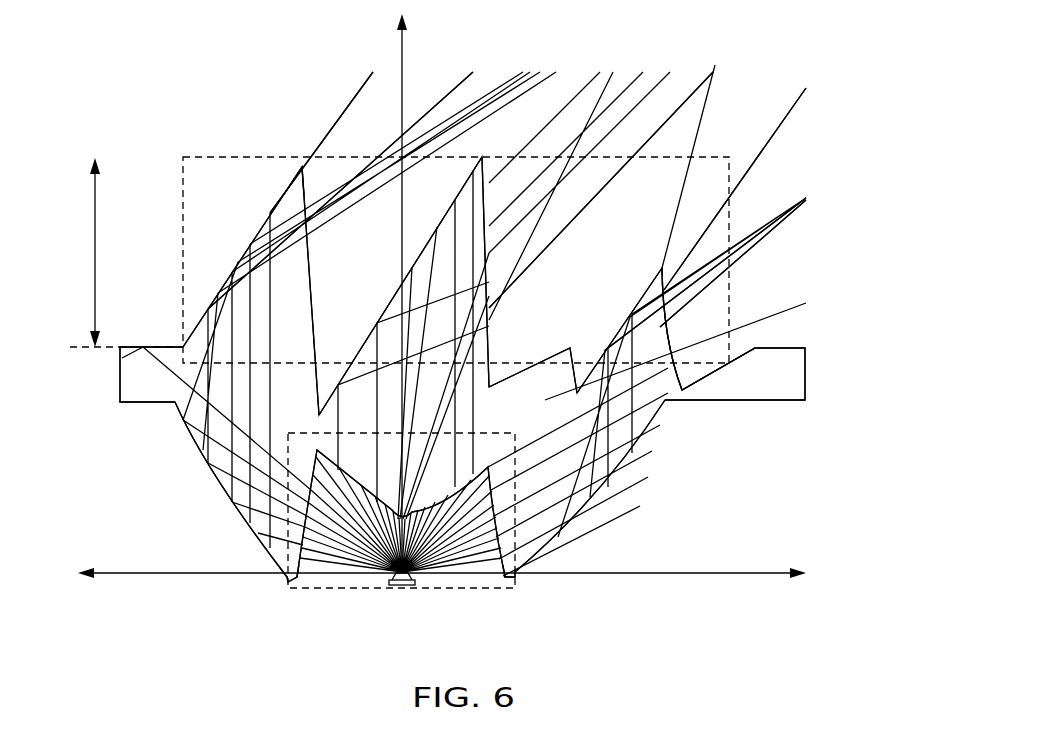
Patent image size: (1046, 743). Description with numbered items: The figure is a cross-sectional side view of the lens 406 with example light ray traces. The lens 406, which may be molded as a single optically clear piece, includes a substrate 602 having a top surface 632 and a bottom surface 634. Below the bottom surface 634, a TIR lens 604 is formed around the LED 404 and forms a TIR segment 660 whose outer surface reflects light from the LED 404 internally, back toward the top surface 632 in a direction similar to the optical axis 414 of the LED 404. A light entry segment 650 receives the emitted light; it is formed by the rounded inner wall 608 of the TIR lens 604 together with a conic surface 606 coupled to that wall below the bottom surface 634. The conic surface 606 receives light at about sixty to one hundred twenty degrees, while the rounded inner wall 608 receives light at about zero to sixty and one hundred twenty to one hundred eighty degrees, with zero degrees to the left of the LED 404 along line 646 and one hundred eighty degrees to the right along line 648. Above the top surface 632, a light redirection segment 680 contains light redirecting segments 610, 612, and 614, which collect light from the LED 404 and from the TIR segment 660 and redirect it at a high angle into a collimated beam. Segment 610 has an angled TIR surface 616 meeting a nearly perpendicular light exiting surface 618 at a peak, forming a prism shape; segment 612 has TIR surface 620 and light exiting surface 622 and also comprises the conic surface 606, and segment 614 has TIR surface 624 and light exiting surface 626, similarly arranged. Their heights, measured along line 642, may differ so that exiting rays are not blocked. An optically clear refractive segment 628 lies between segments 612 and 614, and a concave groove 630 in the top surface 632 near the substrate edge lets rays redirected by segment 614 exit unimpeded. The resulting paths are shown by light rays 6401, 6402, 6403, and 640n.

The lens 406 is at (163, 119).
The light redirection segment 680 is at (200, 153).
The light redirecting segment 610 is at (302, 165).
The light redirecting segment 612 is at (487, 157).
The light redirecting segment 614 is at (662, 268).
The TIR surface 616 is at (250, 246).
The light exiting surface 618 is at (312, 292).
The TIR surface 620 is at (438, 243).
The light exiting surface 622 is at (490, 272).
The TIR surface 624 is at (638, 307).
The light exiting surface 626 is at (727, 300).
The refractive segment 628 is at (562, 350).
The groove 630 is at (695, 380).
The top surface 632 is at (135, 347).
The bottom surface 634 is at (135, 405).
The substrate 602 is at (805, 375).
The TIR lens 604 is at (230, 498).
The conic surface 606 is at (378, 565).
The rounded inner wall 608 is at (318, 585).
The LED 404 is at (400, 588).
The optical axis 414 is at (397, 67).
The line 642 is at (97, 215).
The line 646 is at (130, 572).
The line 648 is at (720, 572).
The light entry segment 650 is at (518, 582).
The TIR segment 660 is at (650, 435).
The light ray 6401 is at (355, 105).
The light ray 6402 is at (450, 93).
The light ray 6403 is at (696, 86).
The light ray 640n is at (782, 122).